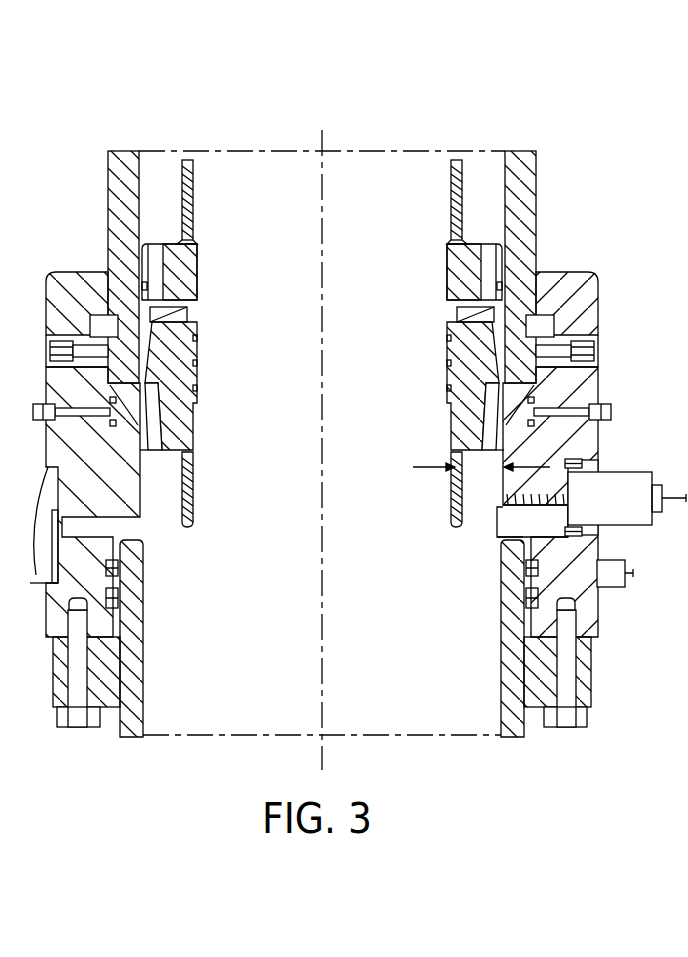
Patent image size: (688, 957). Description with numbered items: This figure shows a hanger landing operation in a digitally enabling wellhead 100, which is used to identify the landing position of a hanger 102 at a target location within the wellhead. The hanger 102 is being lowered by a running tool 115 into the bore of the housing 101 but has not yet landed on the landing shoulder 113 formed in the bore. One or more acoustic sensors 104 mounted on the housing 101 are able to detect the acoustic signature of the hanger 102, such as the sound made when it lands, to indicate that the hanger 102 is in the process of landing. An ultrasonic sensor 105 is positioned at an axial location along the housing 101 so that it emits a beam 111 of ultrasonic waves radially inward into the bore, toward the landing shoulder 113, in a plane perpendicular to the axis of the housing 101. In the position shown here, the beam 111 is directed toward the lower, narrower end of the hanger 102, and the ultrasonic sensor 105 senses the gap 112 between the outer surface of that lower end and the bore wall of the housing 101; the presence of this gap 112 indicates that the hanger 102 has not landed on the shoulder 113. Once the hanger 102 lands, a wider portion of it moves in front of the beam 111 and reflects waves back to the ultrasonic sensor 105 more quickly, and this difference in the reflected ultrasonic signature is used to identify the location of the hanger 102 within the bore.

The digitally enabling wellhead 100 is at (159, 127).
The housing 101 is at (578, 378).
The hanger 102 is at (448, 416).
The acoustic sensor 104 is at (617, 580).
The ultrasonic sensor 105 is at (603, 477).
The beam of ultrasonic waves 111 is at (498, 507).
The gap 112 is at (437, 462).
The landing shoulder 113 is at (148, 503).
The running tool 115 is at (181, 266).